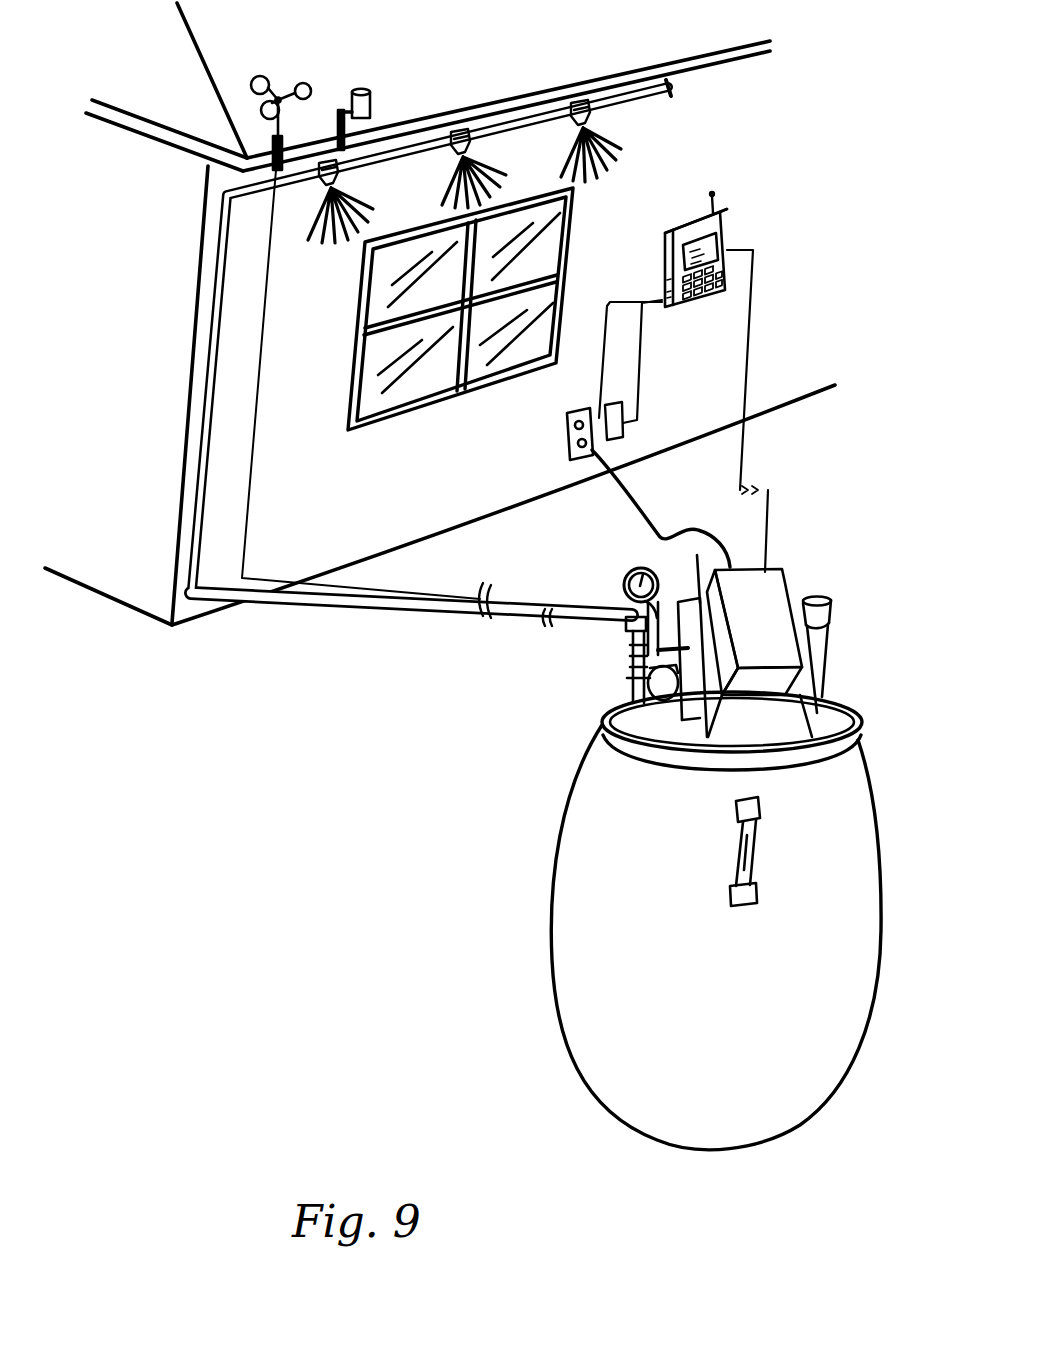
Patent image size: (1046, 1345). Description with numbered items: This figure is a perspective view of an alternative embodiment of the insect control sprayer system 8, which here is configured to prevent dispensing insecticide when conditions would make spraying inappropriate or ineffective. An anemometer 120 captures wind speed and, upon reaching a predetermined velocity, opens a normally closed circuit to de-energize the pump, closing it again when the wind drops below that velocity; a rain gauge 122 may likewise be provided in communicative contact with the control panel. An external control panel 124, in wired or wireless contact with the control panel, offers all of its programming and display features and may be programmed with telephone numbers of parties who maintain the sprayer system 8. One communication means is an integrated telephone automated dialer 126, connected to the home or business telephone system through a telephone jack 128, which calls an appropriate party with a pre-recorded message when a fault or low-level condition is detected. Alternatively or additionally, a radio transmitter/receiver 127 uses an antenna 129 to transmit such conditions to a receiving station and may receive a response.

The insect control sprayer system 8 is at (877, 122).
The anemometer 120 is at (273, 81).
The rain gauge 122 is at (380, 100).
The external control panel 124 is at (736, 232).
The automated dialer 126 is at (668, 309).
The radio transmitter/receiver 127 is at (725, 227).
The telephone jack 128 is at (622, 422).
The antenna 129 is at (704, 205).